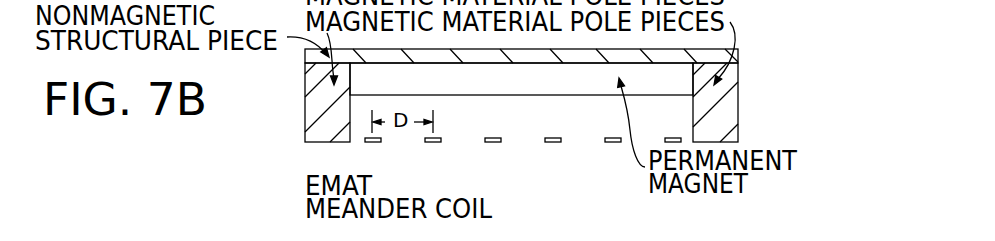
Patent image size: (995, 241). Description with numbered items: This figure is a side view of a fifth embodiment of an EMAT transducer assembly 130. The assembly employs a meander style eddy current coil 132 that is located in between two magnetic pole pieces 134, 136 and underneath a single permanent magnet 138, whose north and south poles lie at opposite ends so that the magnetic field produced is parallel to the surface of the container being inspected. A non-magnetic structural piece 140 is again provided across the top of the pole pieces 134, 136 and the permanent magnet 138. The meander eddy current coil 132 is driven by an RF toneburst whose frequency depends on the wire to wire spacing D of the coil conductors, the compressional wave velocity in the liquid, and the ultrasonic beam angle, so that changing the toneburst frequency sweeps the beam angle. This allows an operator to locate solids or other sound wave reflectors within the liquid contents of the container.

The EMAT transducer assembly 130 is at (764, 36).
The meander style eddy current coil 132 is at (369, 150).
The magnetic pole piece 134 is at (315, 117).
The magnetic pole piece 136 is at (725, 102).
The permanent magnet 138 is at (530, 88).
The non-magnetic structural piece 140 is at (307, 59).